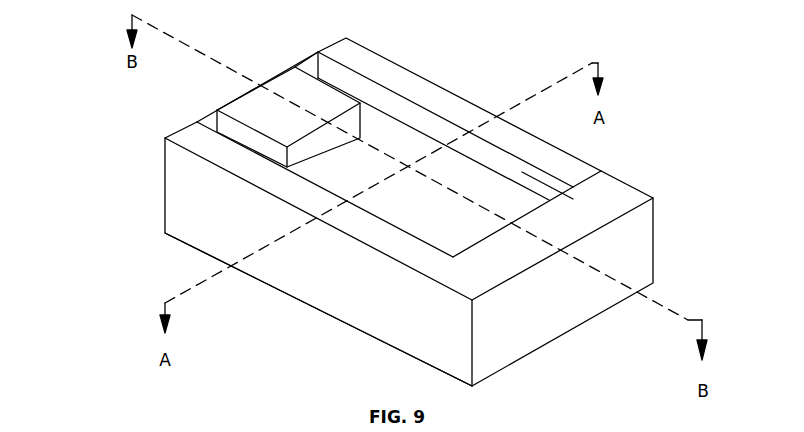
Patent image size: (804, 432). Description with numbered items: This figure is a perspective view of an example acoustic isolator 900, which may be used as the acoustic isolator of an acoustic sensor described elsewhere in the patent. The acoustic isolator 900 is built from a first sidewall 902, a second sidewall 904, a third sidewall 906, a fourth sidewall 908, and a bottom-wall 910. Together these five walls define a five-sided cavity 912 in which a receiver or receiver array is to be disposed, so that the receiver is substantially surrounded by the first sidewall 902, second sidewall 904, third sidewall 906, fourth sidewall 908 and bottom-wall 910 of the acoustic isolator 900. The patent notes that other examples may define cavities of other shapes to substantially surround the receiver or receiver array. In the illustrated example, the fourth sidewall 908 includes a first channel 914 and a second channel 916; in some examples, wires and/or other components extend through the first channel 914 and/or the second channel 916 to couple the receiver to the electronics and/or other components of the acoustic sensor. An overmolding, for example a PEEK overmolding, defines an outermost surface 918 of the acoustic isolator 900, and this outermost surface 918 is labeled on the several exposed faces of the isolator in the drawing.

The acoustic isolator 900 is at (382, 198).
The first sidewall 902 is at (380, 70).
The second sidewall 904 is at (525, 328).
The third sidewall 906 is at (345, 290).
The fourth sidewall 908 is at (288, 92).
The bottom-wall 910 is at (495, 202).
The five-sided cavity 912 is at (530, 169).
The first channel 914 is at (209, 119).
The second channel 916 is at (306, 65).
The outermost surface 918 is at (261, 124).